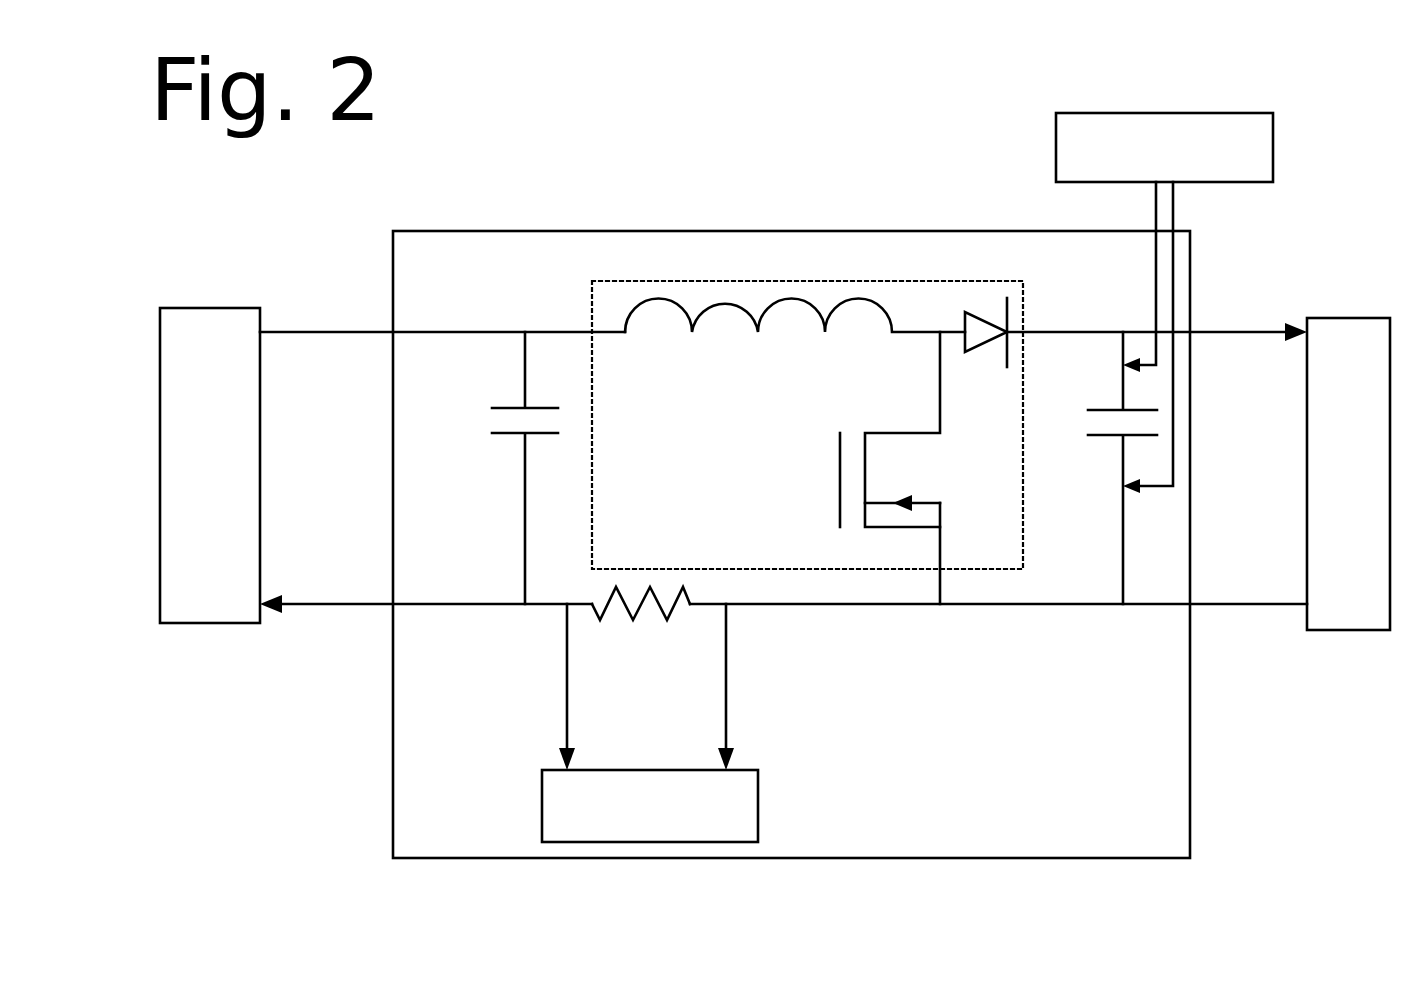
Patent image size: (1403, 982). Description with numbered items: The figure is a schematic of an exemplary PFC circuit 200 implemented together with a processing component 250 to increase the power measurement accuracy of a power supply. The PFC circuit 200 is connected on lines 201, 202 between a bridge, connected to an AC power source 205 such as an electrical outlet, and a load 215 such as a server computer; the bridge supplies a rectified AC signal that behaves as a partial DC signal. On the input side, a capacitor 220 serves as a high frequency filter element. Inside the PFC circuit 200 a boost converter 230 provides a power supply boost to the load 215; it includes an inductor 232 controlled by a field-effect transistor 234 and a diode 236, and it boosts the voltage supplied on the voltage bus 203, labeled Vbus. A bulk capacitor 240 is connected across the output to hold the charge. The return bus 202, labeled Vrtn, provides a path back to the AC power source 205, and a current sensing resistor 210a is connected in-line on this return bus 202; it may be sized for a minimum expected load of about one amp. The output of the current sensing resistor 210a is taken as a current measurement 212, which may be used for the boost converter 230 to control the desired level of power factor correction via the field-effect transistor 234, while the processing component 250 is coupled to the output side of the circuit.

The PFC circuit 200 is at (812, 226).
The line 201 is at (310, 332).
The return bus 202 is at (310, 604).
The voltage bus 203 is at (1222, 332).
The AC power source 205 is at (245, 308).
The current sensing resistor 210a is at (610, 595).
The current measurement 212 is at (627, 770).
The load 215 is at (1325, 318).
The capacitor 220 is at (510, 407).
The boost converter 230 is at (740, 281).
The inductor 232 is at (757, 336).
The field-effect transistor 234 is at (890, 431).
The diode 236 is at (965, 357).
The bulk capacitor 240 is at (1108, 437).
The processing component 250 is at (1183, 113).